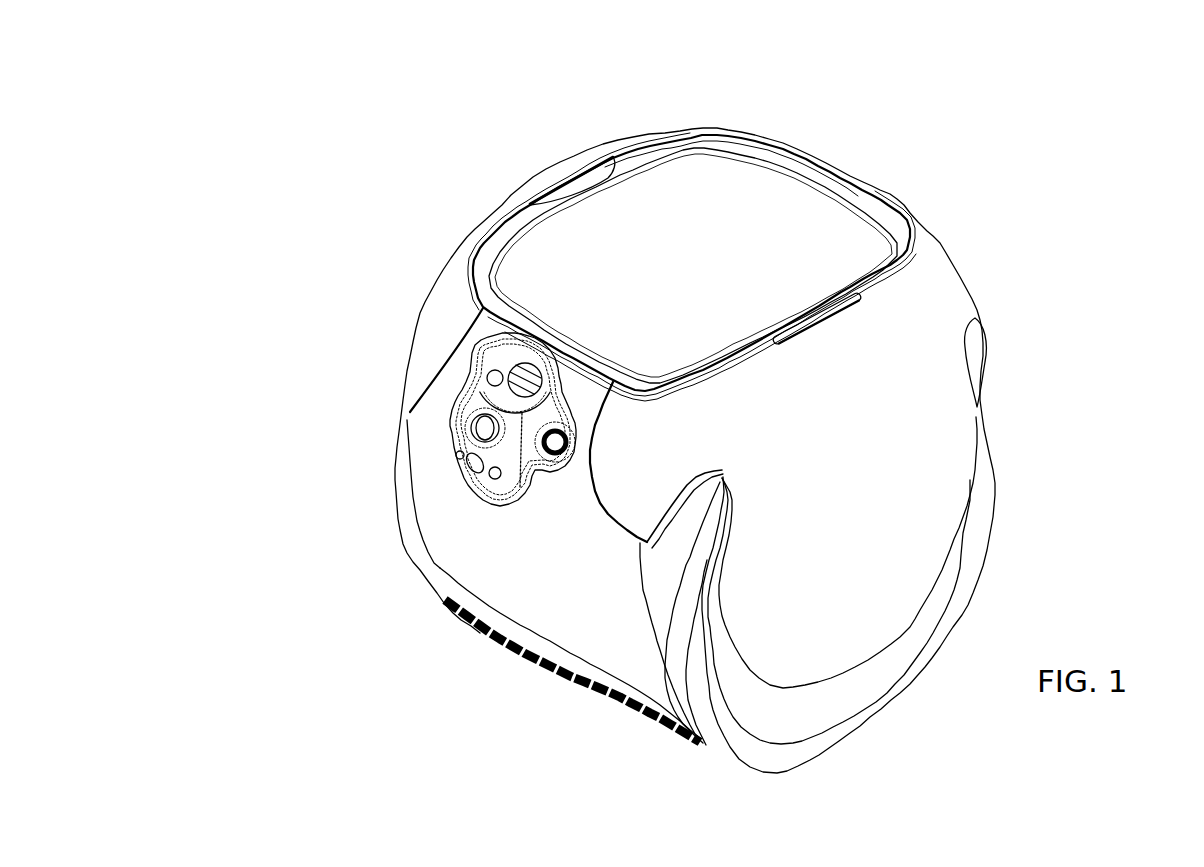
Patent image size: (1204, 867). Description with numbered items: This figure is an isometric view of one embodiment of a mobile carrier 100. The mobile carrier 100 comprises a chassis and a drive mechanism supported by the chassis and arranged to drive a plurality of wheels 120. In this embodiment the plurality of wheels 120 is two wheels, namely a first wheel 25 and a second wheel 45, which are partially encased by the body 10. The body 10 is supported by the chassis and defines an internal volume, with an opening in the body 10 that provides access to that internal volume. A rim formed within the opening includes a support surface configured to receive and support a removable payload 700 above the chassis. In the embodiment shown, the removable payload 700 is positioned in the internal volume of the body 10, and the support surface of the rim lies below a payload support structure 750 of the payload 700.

The mobile carrier 100 is at (352, 206).
The body 10 is at (893, 438).
The first wheel 25 is at (823, 742).
The second wheel 45 is at (410, 543).
The plurality of wheels 120 is at (708, 743).
The removable payload 700 is at (895, 157).
The payload support structure 750 is at (638, 157).